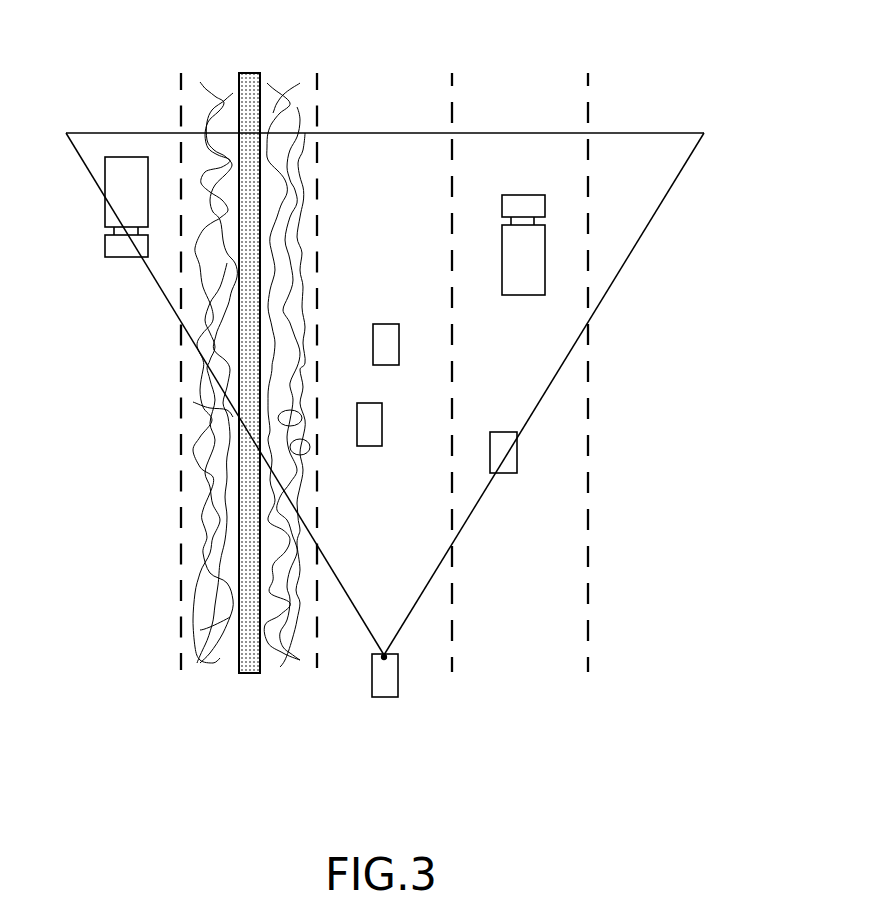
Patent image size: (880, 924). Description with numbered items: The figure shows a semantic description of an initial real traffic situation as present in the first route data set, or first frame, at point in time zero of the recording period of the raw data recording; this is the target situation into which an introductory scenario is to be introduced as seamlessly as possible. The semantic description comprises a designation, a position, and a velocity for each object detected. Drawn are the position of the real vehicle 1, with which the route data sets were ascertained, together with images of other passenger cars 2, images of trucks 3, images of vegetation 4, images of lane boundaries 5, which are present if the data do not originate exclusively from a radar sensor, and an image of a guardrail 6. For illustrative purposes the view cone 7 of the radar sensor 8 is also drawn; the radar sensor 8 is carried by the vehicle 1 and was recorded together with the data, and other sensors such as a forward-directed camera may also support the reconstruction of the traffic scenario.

The real vehicle 1 is at (380, 697).
The passenger cars 2 is at (385, 324).
The trucks 3 is at (113, 257).
The vegetation 4 is at (208, 417).
The lane boundaries 5 is at (179, 666).
The guardrail 6 is at (250, 73).
The view cone 7 is at (655, 133).
The radar sensor 8 is at (388, 659).